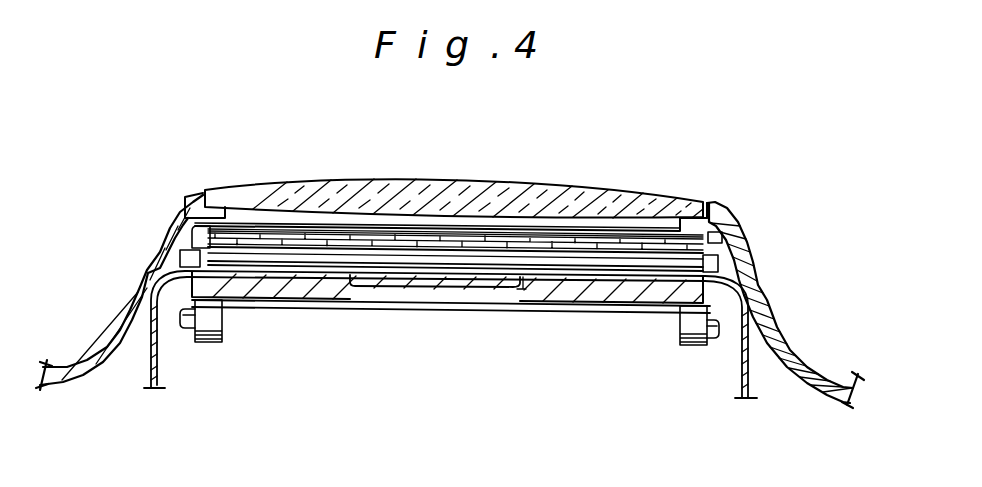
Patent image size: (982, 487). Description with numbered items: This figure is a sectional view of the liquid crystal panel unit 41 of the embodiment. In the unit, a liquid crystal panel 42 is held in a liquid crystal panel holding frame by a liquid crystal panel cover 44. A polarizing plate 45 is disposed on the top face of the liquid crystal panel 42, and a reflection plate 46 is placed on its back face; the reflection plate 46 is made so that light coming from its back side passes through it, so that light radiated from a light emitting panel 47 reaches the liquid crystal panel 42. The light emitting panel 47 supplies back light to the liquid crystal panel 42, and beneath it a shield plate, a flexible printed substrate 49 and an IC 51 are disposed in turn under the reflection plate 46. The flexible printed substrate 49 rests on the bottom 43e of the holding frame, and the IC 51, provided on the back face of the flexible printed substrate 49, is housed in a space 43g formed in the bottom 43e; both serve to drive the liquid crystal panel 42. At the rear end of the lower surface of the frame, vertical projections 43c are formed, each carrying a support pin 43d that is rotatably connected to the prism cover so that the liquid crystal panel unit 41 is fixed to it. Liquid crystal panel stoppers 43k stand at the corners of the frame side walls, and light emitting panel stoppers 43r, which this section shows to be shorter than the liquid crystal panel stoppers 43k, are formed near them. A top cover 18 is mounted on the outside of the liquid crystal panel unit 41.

The top cover 18 is at (197, 203).
The liquid crystal panel unit 41 is at (571, 311).
The liquid crystal panel 42 is at (622, 233).
The vertical projections 43c is at (223, 341).
The support pin 43d is at (186, 329).
The bottom 43e is at (626, 292).
The space 43g is at (511, 291).
The liquid crystal panel stoppers 43k is at (203, 235).
The light emitting panel stoppers 43r is at (188, 259).
The liquid crystal panel cover 44 is at (713, 217).
The polarizing plate 45 is at (350, 229).
The reflection plate 46 is at (256, 228).
The light emitting panel 47 is at (330, 210).
The flexible printed substrate 49 is at (148, 365).
The IC 51 is at (421, 288).